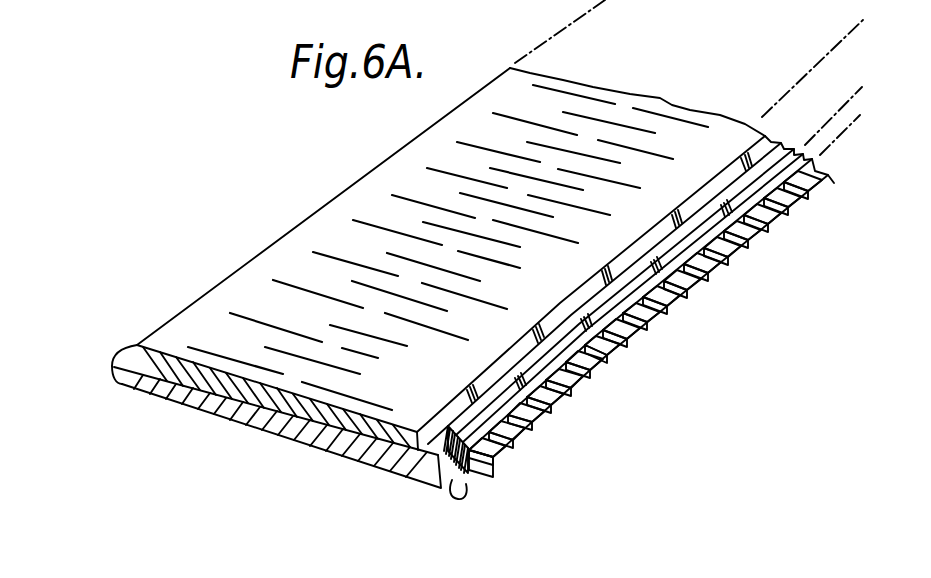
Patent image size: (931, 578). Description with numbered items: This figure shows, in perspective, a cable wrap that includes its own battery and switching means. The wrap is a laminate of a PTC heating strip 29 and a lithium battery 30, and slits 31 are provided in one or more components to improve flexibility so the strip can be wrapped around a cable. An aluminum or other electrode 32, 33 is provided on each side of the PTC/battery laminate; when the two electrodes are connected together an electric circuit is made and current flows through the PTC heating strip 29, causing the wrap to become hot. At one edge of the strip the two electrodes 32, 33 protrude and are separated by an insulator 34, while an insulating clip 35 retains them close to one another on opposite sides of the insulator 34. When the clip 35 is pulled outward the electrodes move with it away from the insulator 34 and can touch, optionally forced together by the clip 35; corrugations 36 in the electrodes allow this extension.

The PTC heating strip 29 is at (138, 355).
The lithium battery 30 is at (125, 372).
The slits 31 is at (438, 225).
The electrode 32 is at (205, 325).
The electrode 33 is at (332, 452).
The insulator 34 is at (525, 452).
The insulating clip 35 is at (627, 347).
The corrugations 36 is at (458, 499).